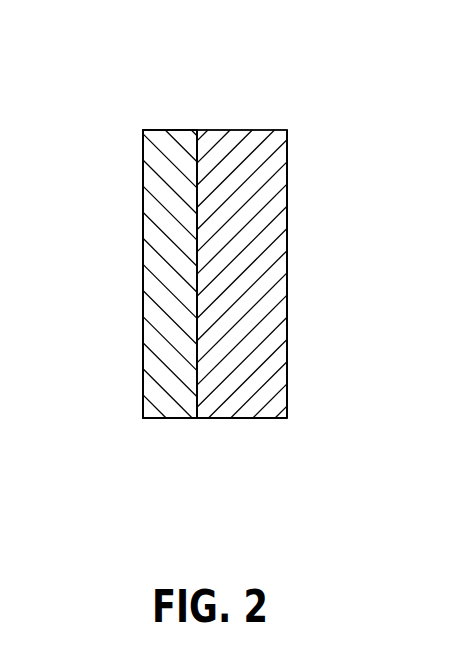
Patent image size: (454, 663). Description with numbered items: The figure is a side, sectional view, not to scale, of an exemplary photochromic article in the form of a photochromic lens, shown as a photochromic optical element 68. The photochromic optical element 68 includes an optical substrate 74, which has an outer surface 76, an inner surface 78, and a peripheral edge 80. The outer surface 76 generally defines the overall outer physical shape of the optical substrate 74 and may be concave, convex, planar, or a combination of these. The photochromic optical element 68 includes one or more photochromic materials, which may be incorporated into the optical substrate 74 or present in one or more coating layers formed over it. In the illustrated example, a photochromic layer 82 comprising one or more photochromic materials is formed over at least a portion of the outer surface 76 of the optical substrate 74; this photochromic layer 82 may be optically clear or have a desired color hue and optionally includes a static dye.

The photochromic optical element 68 is at (344, 149).
The optical substrate 74 is at (232, 136).
The outer surface 76 is at (167, 138).
The inner surface 78 is at (296, 232).
The peripheral edge 80 is at (248, 430).
The photochromic layer 82 is at (157, 267).